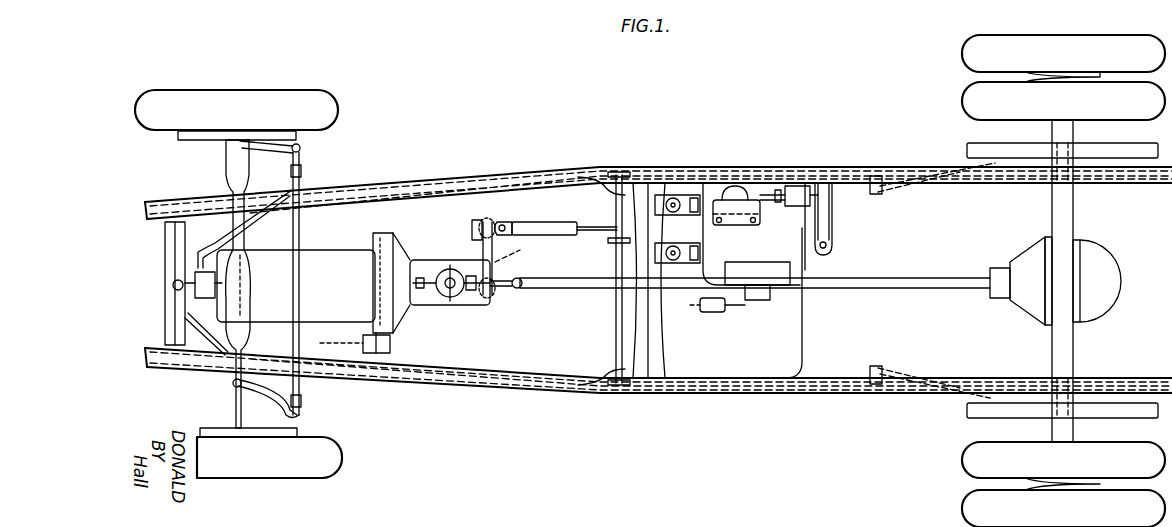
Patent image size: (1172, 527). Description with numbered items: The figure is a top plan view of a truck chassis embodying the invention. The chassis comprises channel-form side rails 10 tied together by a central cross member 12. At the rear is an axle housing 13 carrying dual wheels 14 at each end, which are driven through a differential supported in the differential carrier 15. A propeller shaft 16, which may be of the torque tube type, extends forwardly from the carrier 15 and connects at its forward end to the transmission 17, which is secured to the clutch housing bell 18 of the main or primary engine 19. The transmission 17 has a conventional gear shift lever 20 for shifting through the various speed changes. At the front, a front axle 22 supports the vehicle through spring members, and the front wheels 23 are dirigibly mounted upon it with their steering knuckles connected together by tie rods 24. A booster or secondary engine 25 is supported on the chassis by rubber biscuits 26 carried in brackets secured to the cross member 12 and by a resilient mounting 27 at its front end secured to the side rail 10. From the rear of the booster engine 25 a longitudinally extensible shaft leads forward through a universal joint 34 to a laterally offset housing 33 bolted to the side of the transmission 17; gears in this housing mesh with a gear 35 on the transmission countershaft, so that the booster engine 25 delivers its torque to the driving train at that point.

The side rails 10 is at (1000, 178).
The central cross member 12 is at (653, 343).
The axle housing 13 is at (1075, 212).
The dual wheels 14 is at (972, 88).
The differential carrier 15 is at (1043, 262).
The propeller shaft 16 is at (846, 290).
The transmission 17 is at (472, 300).
The clutch housing bell 18 is at (398, 248).
The main or primary engine 19 is at (342, 250).
The gear shift lever 20 is at (512, 292).
The front axle 22 is at (233, 178).
The front wheels 23 is at (338, 103).
The tie rods 24 is at (304, 173).
The booster or secondary engine 25 is at (692, 186).
The rubber biscuits 26 is at (678, 195).
The resilient mounting 27 is at (833, 242).
The laterally offset housing 33 is at (489, 222).
The universal joint 34 is at (509, 224).
The gear 35 is at (522, 250).